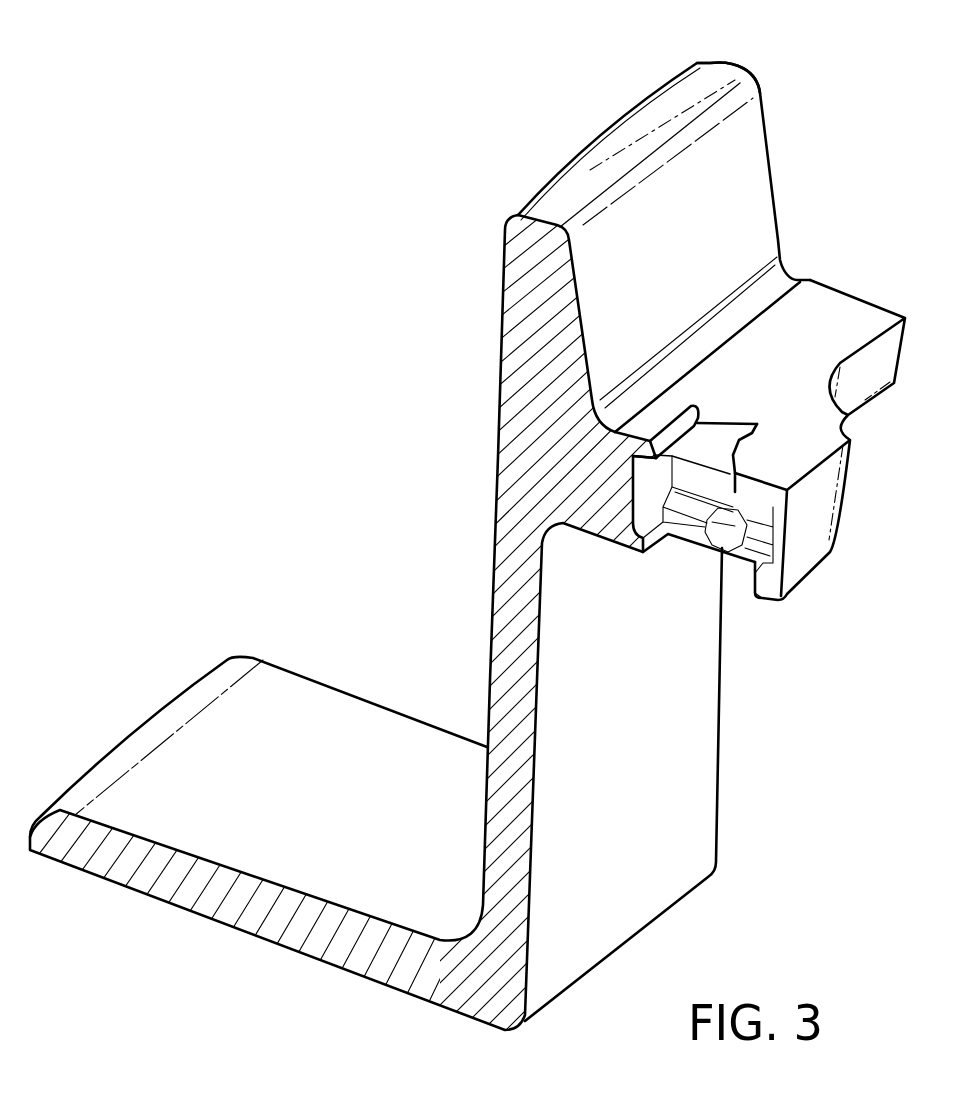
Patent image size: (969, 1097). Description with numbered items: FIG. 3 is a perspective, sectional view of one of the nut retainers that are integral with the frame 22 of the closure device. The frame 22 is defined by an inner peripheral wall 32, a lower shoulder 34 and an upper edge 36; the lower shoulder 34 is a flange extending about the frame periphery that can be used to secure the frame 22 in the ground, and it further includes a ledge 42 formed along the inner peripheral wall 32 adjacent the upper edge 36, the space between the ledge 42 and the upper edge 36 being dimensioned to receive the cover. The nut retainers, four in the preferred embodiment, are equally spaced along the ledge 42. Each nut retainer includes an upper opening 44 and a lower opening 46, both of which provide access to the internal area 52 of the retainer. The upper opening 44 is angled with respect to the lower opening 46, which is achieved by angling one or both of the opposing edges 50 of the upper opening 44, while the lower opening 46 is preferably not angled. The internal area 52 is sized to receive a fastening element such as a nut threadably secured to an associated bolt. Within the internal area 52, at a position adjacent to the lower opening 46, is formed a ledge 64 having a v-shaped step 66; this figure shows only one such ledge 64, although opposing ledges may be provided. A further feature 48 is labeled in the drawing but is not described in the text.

The frame 22 is at (503, 260).
The inner peripheral wall 32 is at (747, 172).
The lower shoulder 34 is at (346, 798).
The upper edge 36 is at (713, 77).
The ledge 42 is at (840, 303).
The upper opening 44 is at (727, 435).
The lower opening 46 is at (742, 594).
The rib 48 is at (686, 412).
The opposing edges 50 is at (652, 437).
The internal area 52 is at (755, 510).
The ledge 64 is at (685, 528).
The v-shaped step 66 is at (723, 547).